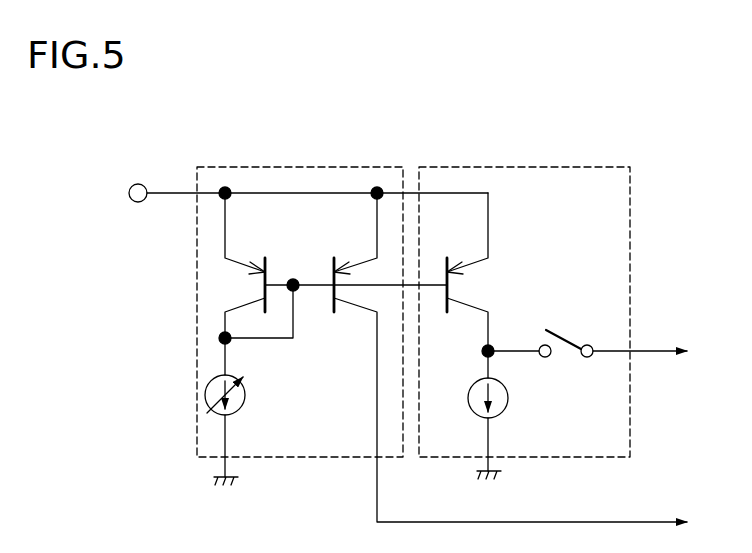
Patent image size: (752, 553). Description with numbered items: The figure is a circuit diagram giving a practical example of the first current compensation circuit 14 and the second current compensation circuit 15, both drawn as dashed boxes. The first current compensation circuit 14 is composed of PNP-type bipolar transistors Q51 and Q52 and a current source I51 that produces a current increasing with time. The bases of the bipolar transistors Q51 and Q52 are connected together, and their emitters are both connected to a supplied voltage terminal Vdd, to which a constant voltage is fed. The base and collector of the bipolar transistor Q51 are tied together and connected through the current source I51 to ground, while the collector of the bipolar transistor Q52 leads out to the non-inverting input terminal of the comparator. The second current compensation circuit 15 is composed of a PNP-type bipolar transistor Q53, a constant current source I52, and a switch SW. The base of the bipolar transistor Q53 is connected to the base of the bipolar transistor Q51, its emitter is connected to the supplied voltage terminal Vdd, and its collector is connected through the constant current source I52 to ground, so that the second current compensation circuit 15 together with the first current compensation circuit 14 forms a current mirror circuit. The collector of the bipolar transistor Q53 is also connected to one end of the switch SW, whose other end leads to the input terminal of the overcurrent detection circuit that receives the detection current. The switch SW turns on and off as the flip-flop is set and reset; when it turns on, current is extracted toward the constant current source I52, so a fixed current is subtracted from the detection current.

The first current compensation circuit 14 is at (301, 166).
The second current compensation circuit 15 is at (522, 166).
The supplied voltage terminal Vdd is at (130, 182).
The PNP-type bipolar transistor Q51 is at (336, 284).
The PNP-type bipolar transistor Q52 is at (506, 357).
The PNP-type bipolar transistor Q53 is at (462, 285).
The current source I51 is at (246, 430).
The constant current source I52 is at (511, 428).
The switch SW is at (563, 333).